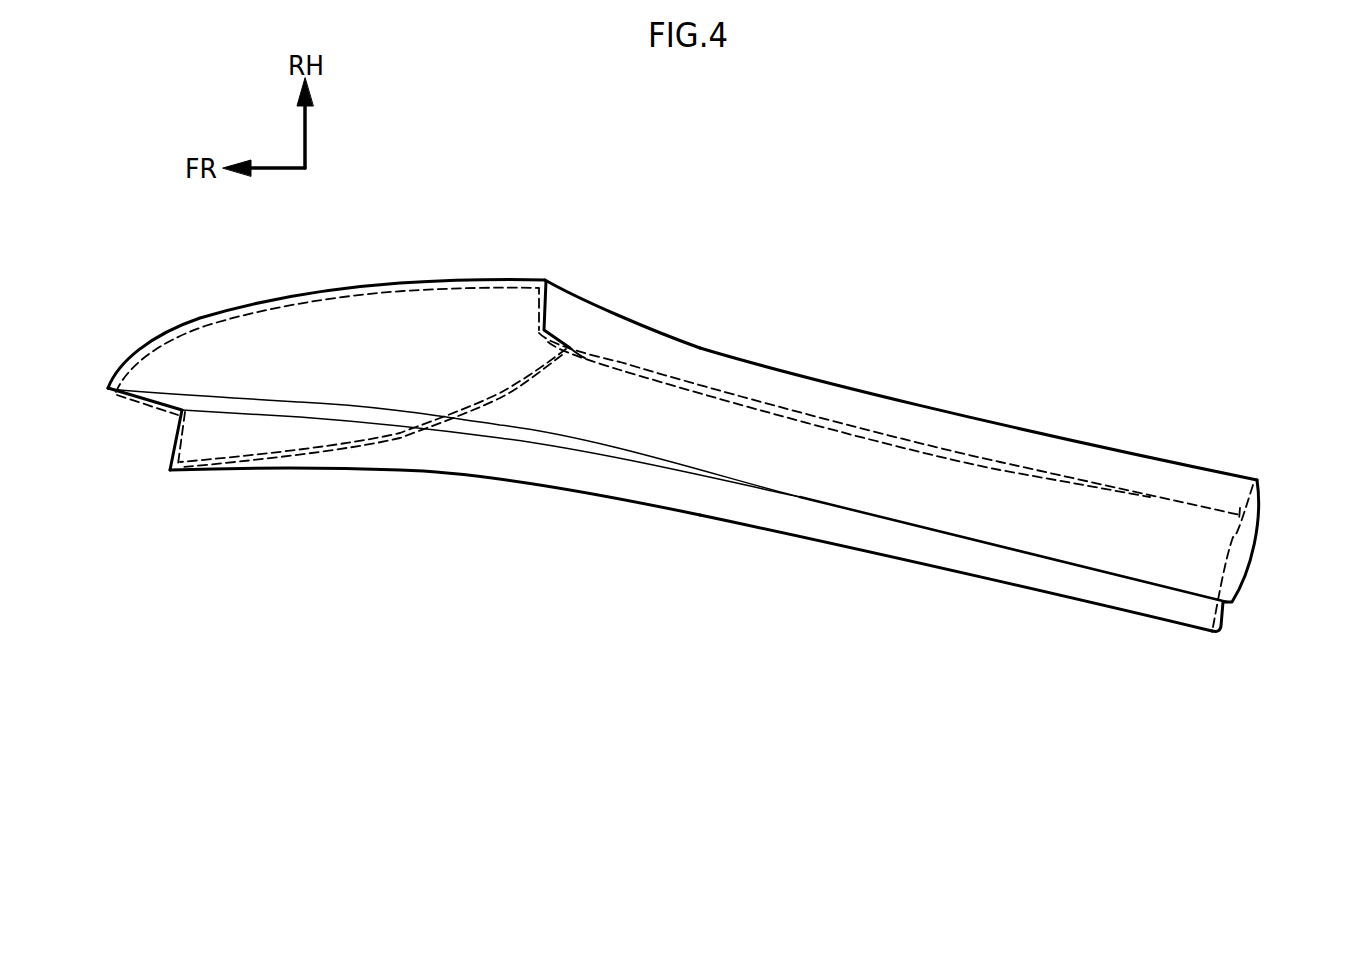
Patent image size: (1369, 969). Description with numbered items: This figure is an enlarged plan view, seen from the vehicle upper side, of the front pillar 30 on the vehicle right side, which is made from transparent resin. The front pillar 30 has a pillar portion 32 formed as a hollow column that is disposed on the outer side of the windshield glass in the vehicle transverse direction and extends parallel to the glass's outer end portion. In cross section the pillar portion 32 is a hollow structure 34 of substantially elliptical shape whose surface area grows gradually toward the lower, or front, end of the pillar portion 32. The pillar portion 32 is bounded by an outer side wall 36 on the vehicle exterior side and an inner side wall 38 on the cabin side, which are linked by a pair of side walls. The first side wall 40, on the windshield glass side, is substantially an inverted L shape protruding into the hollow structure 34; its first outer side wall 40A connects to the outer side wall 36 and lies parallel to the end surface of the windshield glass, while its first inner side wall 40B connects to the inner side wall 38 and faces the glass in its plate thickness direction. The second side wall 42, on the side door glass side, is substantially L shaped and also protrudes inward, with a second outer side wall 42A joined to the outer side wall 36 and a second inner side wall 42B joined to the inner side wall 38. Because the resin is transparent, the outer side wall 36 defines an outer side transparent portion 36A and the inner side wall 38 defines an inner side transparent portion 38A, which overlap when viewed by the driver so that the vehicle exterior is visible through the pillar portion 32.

The front pillar 30 is at (965, 285).
The pillar portion 32 is at (825, 385).
The hollow structure 34 is at (1232, 550).
The outer side wall 36 is at (1127, 465).
The outer side transparent portion 36A is at (1017, 447).
The inner side wall 38 is at (1045, 538).
The inner side transparent portion 38A is at (1145, 555).
The first side wall 40 is at (403, 525).
The first outer side wall 40A is at (490, 432).
The first inner side wall 40B is at (523, 470).
The second side wall 42 is at (775, 190).
The second outer side wall 42A is at (642, 347).
The second inner side wall 42B is at (674, 390).